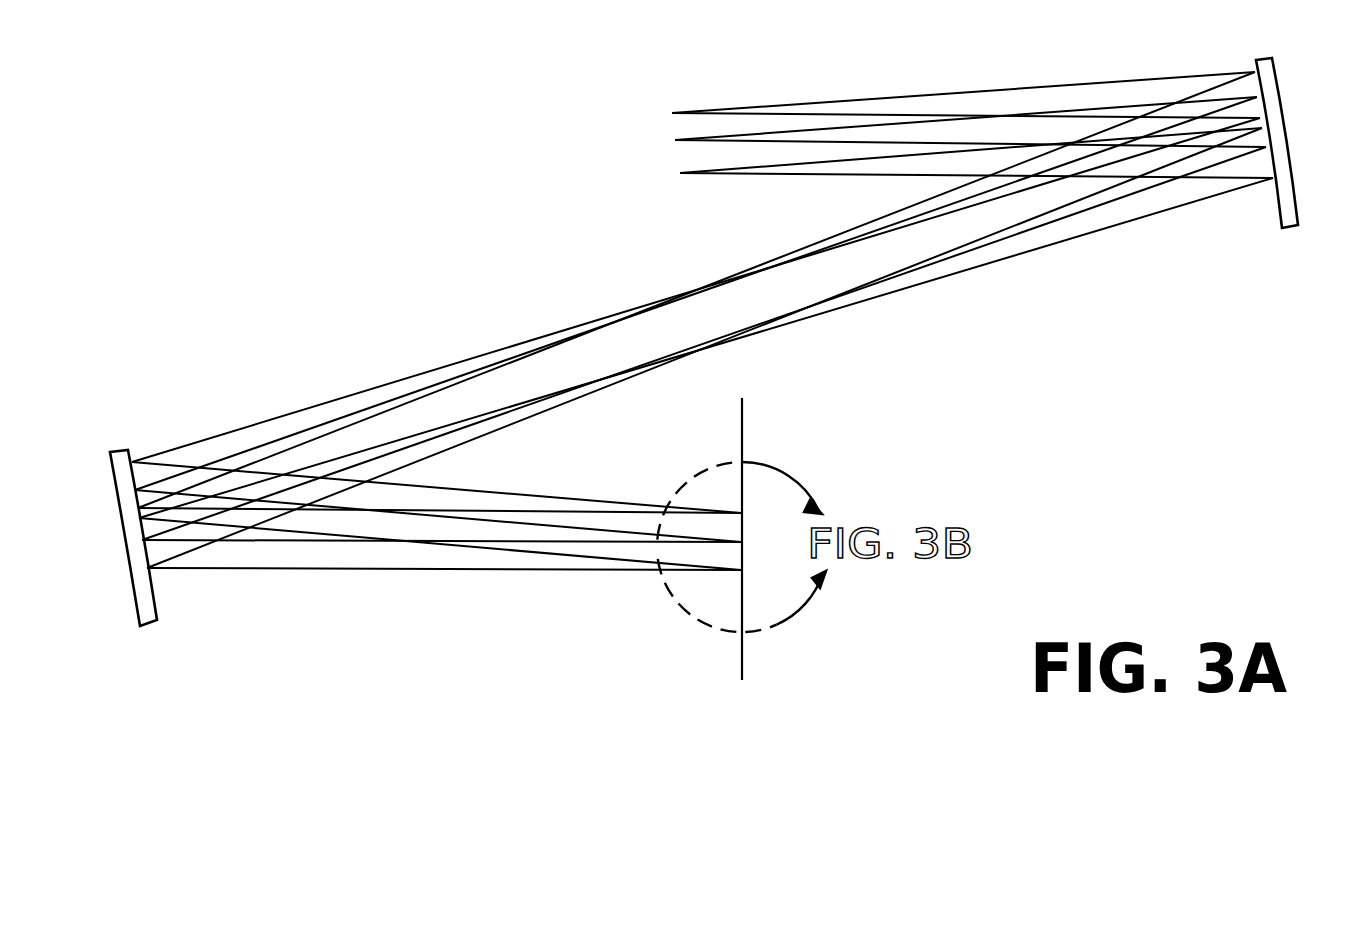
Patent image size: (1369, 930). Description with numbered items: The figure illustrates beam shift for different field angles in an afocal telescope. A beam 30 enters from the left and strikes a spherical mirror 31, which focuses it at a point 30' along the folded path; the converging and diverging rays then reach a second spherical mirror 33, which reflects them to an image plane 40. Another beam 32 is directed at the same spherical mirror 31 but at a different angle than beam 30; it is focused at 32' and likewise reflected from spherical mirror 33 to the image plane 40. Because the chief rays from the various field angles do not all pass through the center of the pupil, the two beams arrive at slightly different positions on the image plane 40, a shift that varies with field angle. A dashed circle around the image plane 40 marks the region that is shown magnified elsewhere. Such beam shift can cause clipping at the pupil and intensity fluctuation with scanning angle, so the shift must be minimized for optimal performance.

The beam 30 is at (969, 90).
The beam 32 is at (976, 178).
The spherical mirror 31 is at (1281, 103).
The spherical mirror 33 is at (124, 552).
The focus of beam 30 30' is at (696, 290).
The focus of beam 32 32' is at (706, 348).
The image plane 40 is at (743, 655).